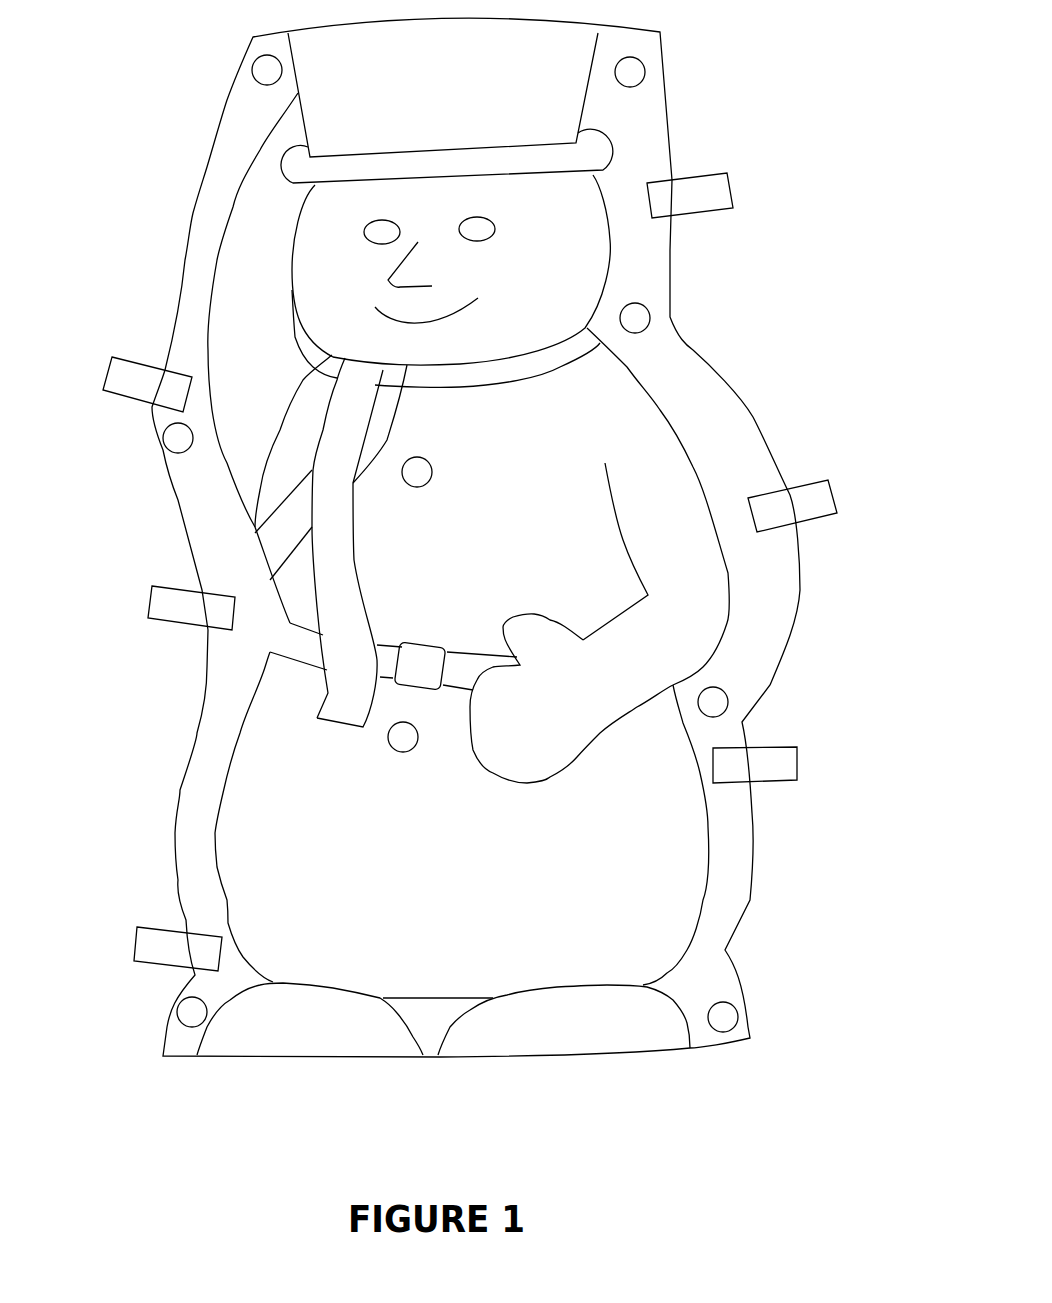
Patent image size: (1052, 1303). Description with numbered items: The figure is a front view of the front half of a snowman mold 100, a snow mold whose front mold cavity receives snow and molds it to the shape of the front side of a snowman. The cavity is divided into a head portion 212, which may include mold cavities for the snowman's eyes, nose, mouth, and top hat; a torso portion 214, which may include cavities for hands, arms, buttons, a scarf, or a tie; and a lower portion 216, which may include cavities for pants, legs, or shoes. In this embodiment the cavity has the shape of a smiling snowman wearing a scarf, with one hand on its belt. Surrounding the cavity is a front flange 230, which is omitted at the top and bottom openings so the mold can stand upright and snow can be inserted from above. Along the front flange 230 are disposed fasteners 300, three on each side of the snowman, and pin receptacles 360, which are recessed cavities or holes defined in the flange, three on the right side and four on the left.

The snowman mold 100 is at (471, 626).
The head portion 212 is at (292, 255).
The torso portion 214 is at (255, 525).
The lower portion 216 is at (213, 847).
The front flange 230 is at (755, 857).
The fastener 300 is at (838, 498).
The pin receptacle 360 is at (728, 702).